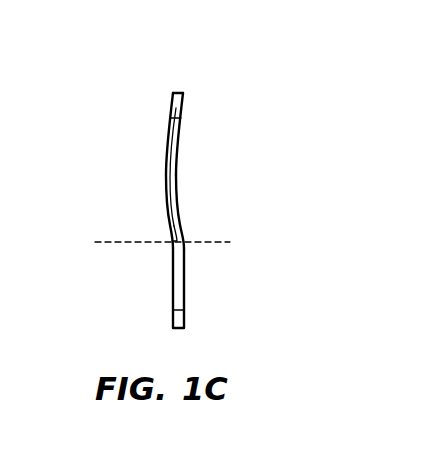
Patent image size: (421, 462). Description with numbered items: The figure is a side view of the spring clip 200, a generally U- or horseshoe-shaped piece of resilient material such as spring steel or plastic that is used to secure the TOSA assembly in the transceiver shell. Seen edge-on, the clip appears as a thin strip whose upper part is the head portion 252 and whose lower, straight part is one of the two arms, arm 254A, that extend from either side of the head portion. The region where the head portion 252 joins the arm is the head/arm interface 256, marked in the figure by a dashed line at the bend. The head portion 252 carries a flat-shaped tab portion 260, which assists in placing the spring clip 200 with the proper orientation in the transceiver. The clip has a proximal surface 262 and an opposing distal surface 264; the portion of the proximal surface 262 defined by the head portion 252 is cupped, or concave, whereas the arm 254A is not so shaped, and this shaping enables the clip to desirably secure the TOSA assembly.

The spring clip 200 is at (212, 110).
The head portion 252 is at (168, 141).
The arm 254A is at (172, 282).
The head/arm interface 256 is at (173, 241).
The tab portion 260 is at (171, 109).
The proximal surface 262 is at (184, 131).
The distal surface 264 is at (171, 119).